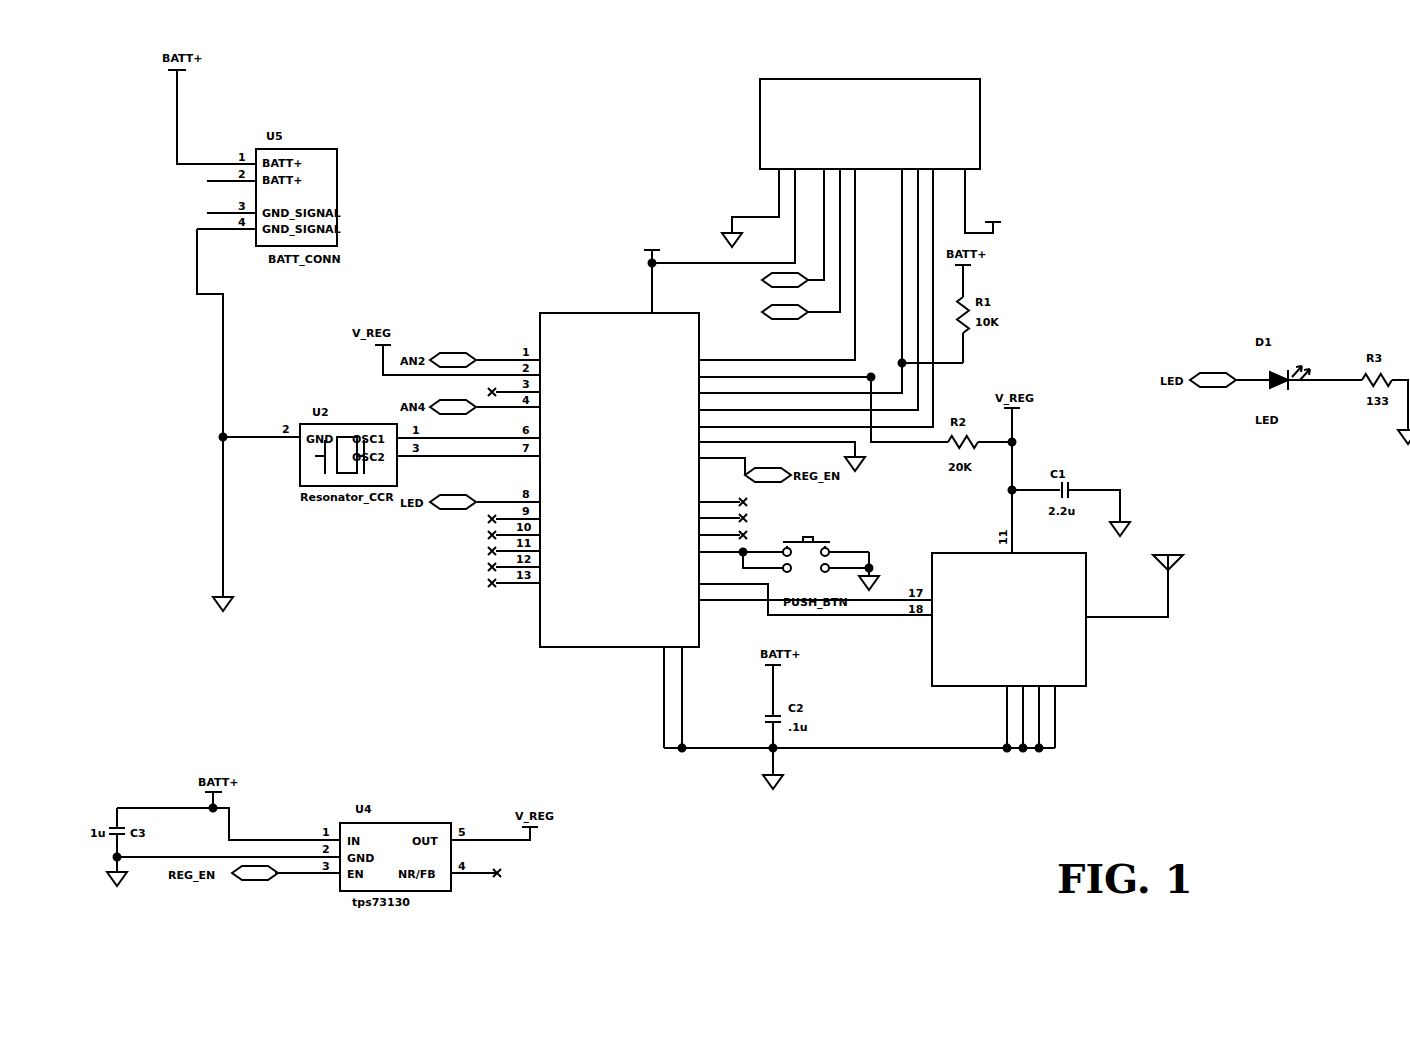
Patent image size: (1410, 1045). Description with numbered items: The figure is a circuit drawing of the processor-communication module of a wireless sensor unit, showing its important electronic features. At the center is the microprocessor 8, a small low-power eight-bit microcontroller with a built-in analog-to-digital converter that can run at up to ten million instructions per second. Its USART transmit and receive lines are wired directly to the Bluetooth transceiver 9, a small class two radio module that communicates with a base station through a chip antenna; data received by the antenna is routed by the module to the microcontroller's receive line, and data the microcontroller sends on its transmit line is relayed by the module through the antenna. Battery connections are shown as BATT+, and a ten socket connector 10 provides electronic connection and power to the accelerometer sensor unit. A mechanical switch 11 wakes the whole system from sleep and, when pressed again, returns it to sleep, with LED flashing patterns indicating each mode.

The microprocessor 8 is at (462, 650).
The Bluetooth transceiver 9 is at (1121, 674).
The ten socket connector 10 is at (724, 134).
The mechanical switch 11 is at (849, 521).